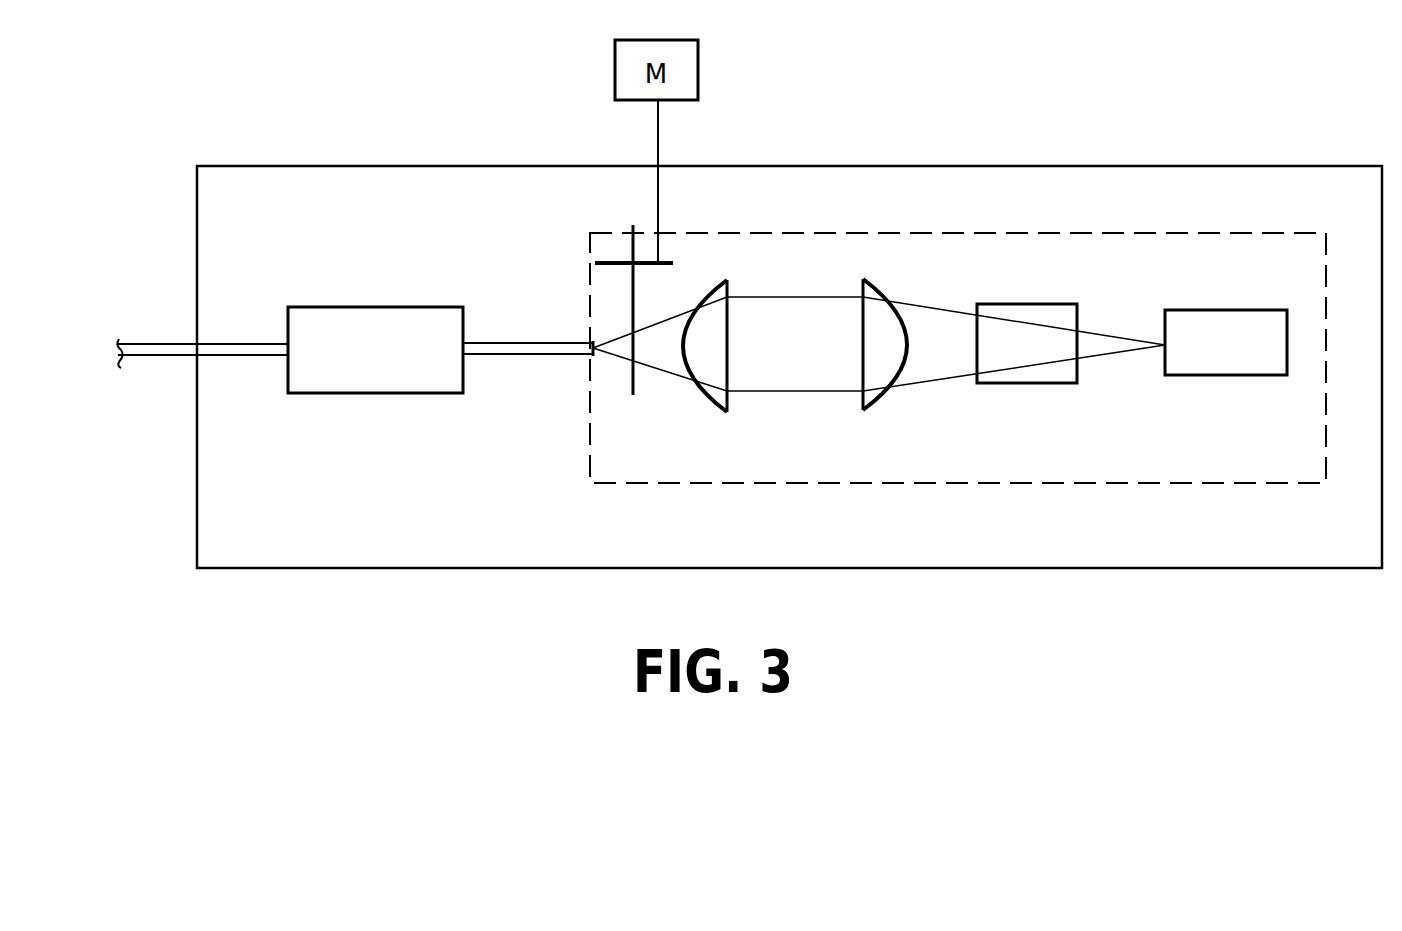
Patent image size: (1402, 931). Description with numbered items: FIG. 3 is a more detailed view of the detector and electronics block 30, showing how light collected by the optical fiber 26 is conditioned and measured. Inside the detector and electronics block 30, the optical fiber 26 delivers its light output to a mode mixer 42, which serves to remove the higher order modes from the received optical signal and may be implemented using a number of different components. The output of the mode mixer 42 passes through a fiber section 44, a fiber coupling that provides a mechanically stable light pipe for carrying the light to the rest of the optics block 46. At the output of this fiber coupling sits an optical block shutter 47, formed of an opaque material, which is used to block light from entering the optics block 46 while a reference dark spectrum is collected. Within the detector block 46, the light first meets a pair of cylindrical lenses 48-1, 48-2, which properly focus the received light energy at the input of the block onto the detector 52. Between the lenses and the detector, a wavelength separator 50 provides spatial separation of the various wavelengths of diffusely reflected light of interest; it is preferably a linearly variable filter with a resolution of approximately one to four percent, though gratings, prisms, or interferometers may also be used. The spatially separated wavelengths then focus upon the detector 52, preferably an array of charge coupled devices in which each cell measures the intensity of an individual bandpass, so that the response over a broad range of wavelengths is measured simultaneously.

The optical fiber 26 is at (158, 343).
The detector and electronics block 30 is at (1195, 165).
The mode mixer 42 is at (327, 305).
The fiber section 44 is at (540, 355).
The detector block 46 is at (847, 233).
The optical block shutter 47 is at (630, 297).
The cylindrical lens 48-1 is at (703, 403).
The cylindrical lens 48-2 is at (877, 403).
The wavelength separator 50 is at (1027, 385).
The detector 52 is at (1223, 375).